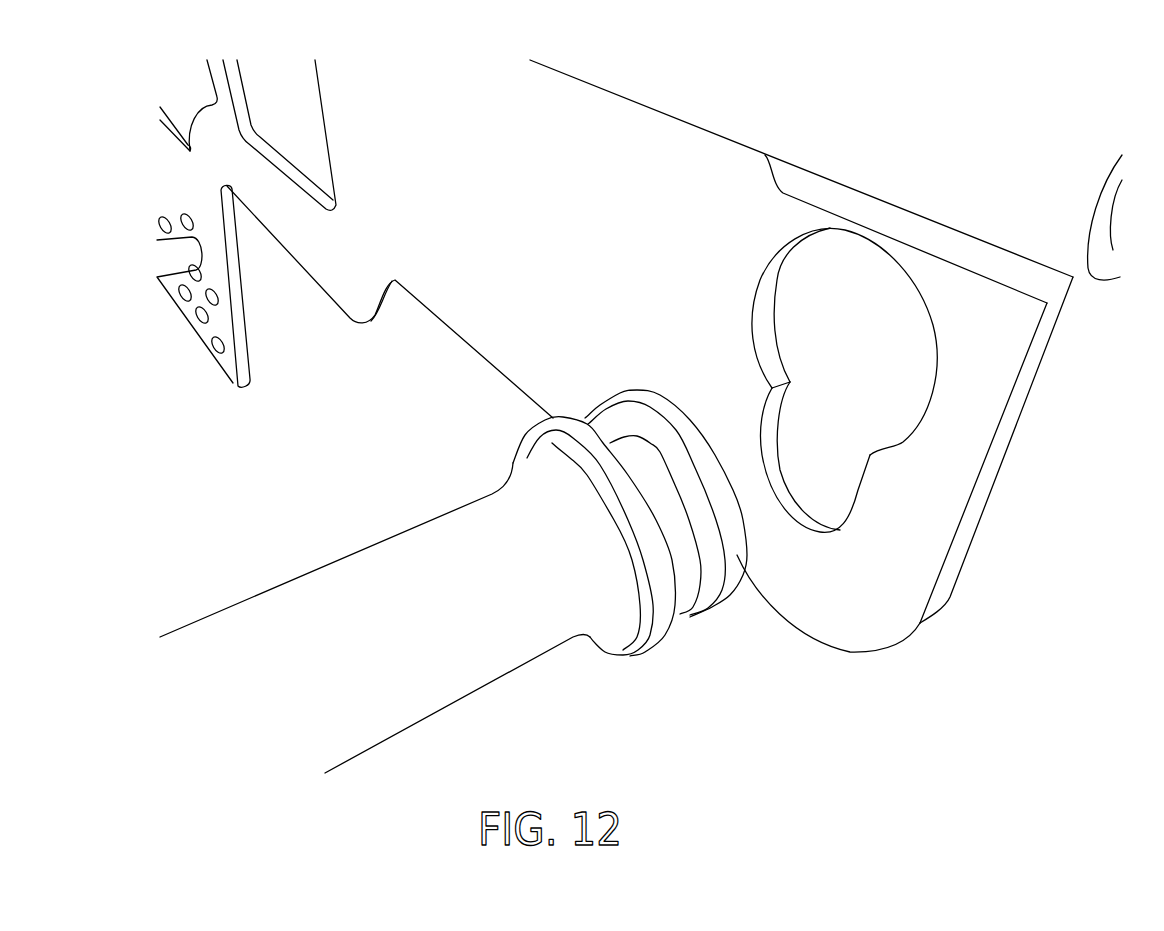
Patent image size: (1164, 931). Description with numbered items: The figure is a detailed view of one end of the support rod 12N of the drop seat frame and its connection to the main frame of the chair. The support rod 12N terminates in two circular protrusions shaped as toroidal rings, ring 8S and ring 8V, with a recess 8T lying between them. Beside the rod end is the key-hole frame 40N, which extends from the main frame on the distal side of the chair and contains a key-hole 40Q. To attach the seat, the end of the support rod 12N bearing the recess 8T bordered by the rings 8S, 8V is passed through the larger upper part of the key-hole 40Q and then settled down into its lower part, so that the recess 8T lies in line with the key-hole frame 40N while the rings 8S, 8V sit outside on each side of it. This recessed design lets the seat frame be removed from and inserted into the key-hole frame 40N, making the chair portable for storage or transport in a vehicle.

The support rod 12N is at (395, 678).
The ring 8S is at (658, 623).
The recess 8T is at (673, 537).
The ring 8V is at (742, 590).
The key-hole frame 40N is at (923, 493).
The key-hole 40Q is at (875, 362).